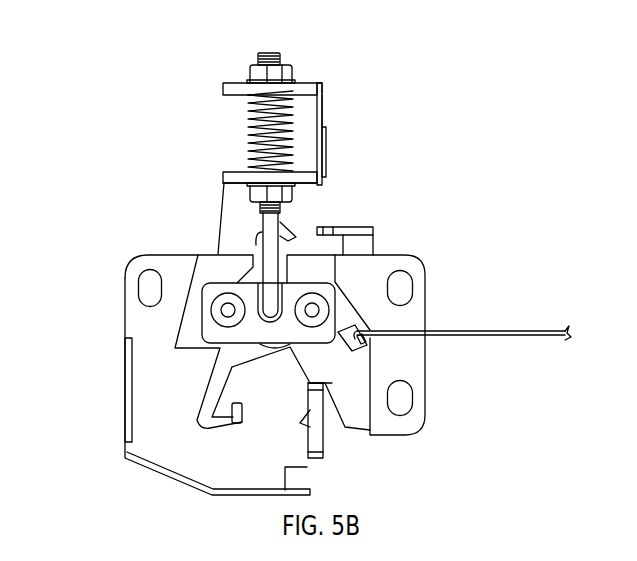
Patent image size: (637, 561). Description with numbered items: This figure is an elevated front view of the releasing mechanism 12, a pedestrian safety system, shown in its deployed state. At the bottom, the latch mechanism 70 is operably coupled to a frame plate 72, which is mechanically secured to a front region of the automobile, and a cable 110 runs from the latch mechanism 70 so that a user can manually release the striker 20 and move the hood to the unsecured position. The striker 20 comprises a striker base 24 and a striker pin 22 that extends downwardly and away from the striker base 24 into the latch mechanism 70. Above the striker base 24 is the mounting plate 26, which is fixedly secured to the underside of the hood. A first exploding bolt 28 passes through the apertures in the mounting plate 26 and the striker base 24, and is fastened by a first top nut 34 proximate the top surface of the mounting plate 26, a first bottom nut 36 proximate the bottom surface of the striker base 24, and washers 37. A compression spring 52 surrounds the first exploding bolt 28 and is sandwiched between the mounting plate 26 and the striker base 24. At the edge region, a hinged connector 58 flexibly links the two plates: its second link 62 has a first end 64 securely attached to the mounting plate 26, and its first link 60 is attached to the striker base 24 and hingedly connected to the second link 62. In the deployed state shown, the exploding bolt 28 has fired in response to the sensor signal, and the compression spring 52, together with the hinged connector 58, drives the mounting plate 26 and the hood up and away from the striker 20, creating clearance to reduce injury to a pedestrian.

The releasing mechanism 12 is at (156, 47).
The striker 20 is at (330, 198).
The striker pin 22 is at (268, 238).
The striker base 24 is at (230, 172).
The mounting plate 26 is at (232, 85).
The first exploding bolt 28 is at (268, 53).
The first top nut 34 is at (280, 67).
The first bottom nut 36 is at (258, 203).
The washers 37 is at (258, 187).
The compression spring 52 is at (252, 120).
The hinged connector 58 is at (345, 119).
The first link 60 is at (320, 163).
The second link 62 is at (322, 110).
The first end 64 is at (322, 85).
The latch mechanism 70 is at (316, 217).
The frame plate 72 is at (408, 320).
The cable 110 is at (503, 330).